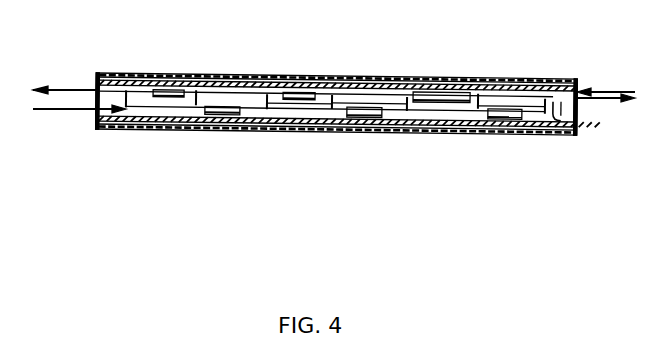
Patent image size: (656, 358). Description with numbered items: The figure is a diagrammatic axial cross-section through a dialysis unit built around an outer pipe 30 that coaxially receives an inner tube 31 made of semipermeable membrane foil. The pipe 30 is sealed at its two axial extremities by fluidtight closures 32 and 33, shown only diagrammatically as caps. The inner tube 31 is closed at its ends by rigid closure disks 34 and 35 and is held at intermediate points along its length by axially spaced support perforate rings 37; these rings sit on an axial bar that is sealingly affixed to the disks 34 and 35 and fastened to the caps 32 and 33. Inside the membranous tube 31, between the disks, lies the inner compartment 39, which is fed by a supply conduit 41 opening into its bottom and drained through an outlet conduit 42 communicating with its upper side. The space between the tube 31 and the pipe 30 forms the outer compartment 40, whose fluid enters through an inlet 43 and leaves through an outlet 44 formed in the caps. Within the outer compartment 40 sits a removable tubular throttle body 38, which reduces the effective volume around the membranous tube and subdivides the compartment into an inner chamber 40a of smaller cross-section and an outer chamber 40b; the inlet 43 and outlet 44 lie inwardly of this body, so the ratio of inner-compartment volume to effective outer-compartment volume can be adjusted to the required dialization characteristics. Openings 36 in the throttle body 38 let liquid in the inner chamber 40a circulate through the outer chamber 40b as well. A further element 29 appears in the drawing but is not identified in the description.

The deflecting element 29 is at (555, 122).
The outer pipe 30 is at (192, 129).
The inner tube 31 is at (298, 116).
The fluidtight closure 32 is at (97, 128).
The fluidtight closure 33 is at (560, 137).
The rigid closure disk 34 is at (133, 111).
The rigid closure disk 35 is at (515, 135).
The openings 36 is at (493, 93).
The support perforate rings 37 is at (382, 95).
The tubular throttle body 38 is at (177, 86).
The inner compartment 39 is at (237, 120).
The outer compartment 40 is at (398, 136).
The inner chamber 40a is at (395, 97).
The outer chamber 40b is at (441, 133).
The supply conduit 41 is at (55, 111).
The outlet conduit 42 is at (600, 103).
The inlet 43 is at (605, 88).
The outlet 44 is at (61, 88).